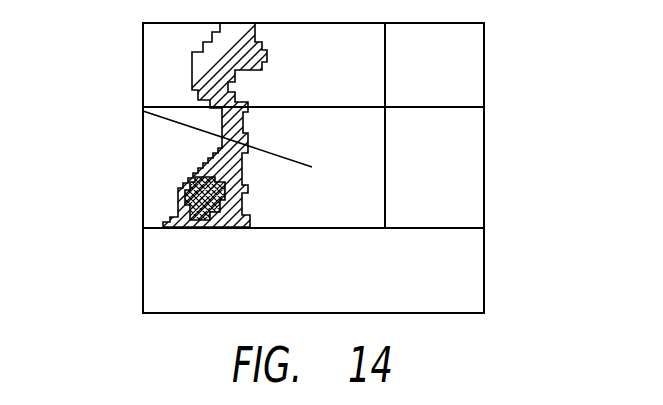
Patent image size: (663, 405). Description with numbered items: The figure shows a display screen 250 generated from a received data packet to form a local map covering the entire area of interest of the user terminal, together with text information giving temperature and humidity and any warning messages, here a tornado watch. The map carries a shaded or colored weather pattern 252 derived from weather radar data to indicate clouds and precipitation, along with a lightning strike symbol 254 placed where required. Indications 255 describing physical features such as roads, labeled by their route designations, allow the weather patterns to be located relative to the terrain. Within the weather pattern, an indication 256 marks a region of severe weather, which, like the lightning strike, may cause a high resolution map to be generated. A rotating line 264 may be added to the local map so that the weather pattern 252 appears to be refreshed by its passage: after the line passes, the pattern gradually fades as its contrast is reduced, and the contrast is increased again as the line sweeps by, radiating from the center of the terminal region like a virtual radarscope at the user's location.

The display screen 250 is at (152, 252).
The weather pattern 252 is at (186, 176).
The lightning strike symbol 254 is at (264, 167).
The indication of physical features 255 is at (432, 107).
The indication of severe weather 256 is at (180, 195).
The rotating line 264 is at (217, 133).